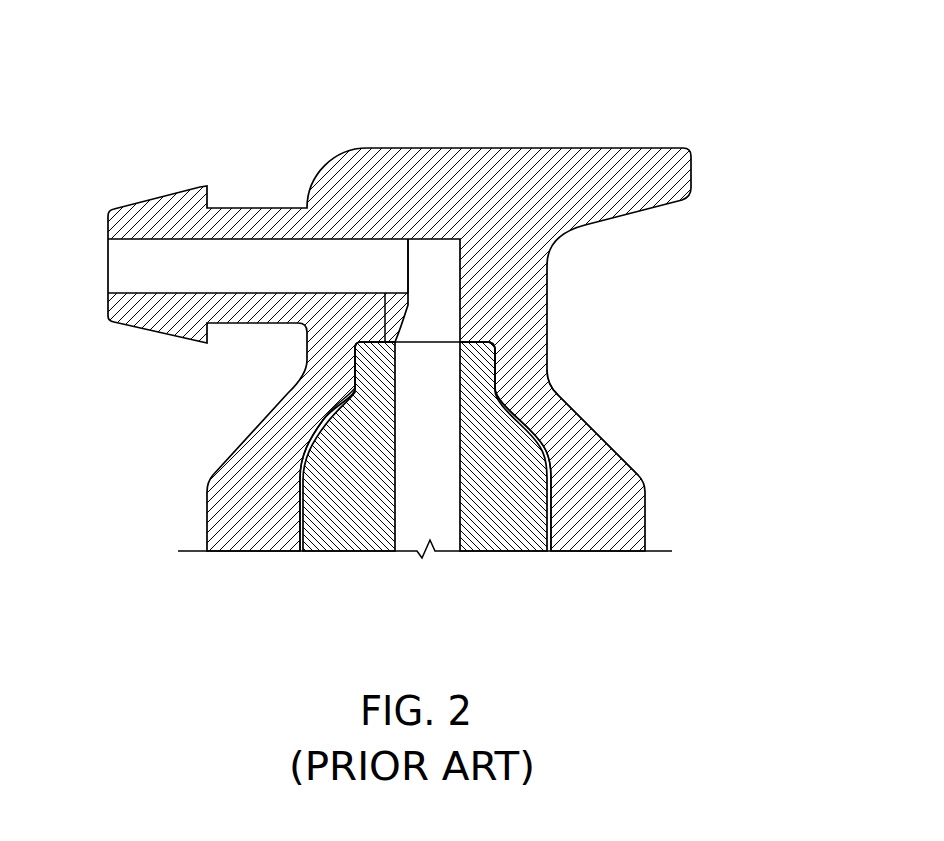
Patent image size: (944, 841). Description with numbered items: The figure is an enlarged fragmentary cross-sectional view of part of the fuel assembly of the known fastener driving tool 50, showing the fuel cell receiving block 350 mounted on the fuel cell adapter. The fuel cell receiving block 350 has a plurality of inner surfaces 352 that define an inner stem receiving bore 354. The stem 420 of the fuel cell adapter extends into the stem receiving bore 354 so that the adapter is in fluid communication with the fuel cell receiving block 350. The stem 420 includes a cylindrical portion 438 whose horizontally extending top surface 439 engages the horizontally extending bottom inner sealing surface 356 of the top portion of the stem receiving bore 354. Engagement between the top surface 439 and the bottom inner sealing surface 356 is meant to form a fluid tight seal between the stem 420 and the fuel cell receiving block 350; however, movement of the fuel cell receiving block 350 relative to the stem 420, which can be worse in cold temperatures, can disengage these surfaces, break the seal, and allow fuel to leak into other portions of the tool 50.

The fastener driving tool 50 is at (146, 74).
The fuel cell receiving block 350 is at (615, 518).
The inner surfaces 352 is at (300, 472).
The stem receiving bore 354 is at (553, 468).
The bottom inner sealing surface 356 is at (495, 340).
The stem 420 is at (495, 510).
The cylindrical portion 438 is at (363, 373).
The top surface 439 is at (385, 293).